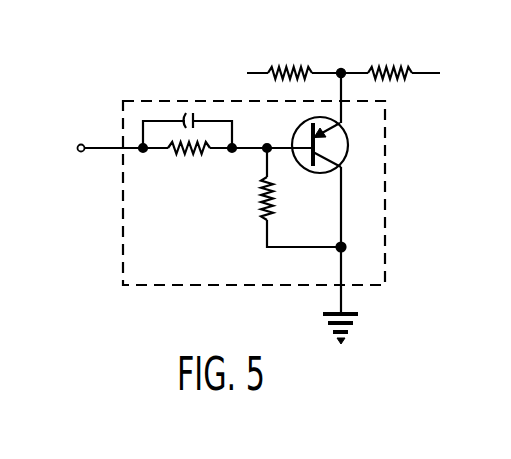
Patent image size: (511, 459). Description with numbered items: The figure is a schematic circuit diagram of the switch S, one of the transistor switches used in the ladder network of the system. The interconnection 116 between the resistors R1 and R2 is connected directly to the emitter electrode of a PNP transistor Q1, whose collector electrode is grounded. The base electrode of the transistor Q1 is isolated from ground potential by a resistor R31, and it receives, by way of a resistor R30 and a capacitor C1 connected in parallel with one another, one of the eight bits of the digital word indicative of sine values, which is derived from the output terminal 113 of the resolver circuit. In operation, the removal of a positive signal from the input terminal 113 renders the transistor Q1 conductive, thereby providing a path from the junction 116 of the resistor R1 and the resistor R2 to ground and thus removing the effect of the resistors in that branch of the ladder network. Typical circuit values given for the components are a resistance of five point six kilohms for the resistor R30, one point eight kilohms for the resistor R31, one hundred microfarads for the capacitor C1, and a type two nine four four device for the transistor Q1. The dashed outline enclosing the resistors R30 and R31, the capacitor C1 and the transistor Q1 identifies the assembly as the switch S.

The input terminal 113 is at (81, 144).
The interconnection 116 is at (354, 56).
The resistor R1 is at (290, 61).
The resistor R2 is at (390, 61).
The resistor R30 is at (189, 161).
The resistor R31 is at (284, 199).
The capacitor C1 is at (183, 122).
The PNP transistor Q1 is at (330, 149).
The switch S is at (254, 193).